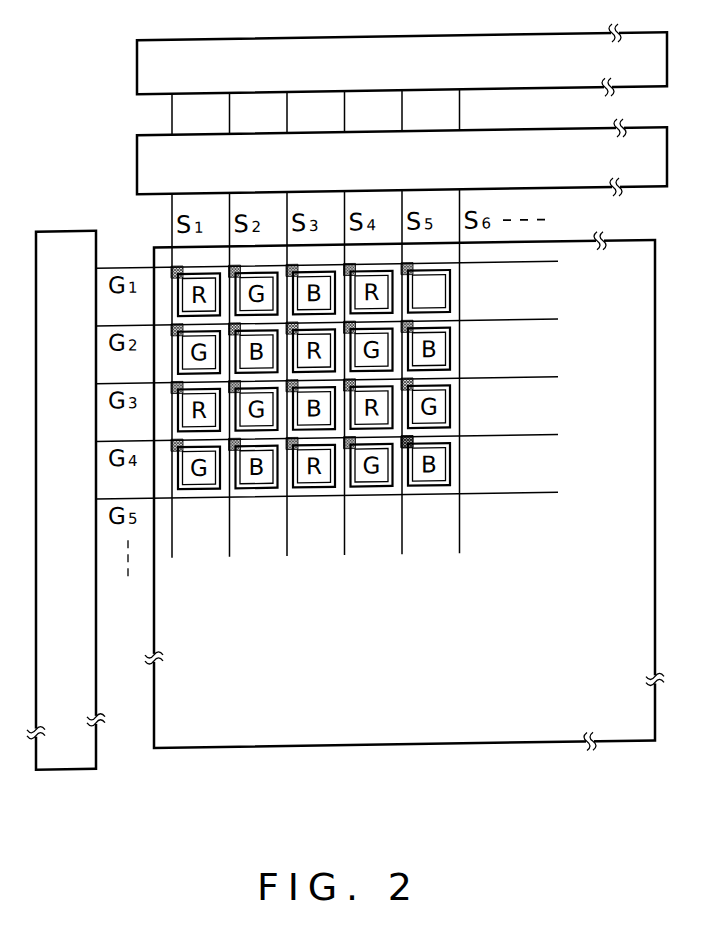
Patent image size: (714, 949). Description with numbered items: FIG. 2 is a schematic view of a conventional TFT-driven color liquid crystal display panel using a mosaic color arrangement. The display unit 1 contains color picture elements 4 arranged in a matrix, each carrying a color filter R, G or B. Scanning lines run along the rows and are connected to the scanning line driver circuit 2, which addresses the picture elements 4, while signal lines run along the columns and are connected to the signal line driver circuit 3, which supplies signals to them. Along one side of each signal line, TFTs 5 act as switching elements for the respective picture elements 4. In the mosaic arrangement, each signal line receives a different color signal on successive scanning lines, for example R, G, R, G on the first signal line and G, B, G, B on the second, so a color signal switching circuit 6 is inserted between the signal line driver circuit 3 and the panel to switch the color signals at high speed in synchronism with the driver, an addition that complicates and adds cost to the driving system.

The display unit 1 is at (655, 277).
The scanning line driver circuit 2 is at (66, 229).
The signal line driver circuit 3 is at (137, 72).
The color picture element 4 is at (452, 296).
The TFT 5 is at (413, 446).
The color signal switching circuit 6 is at (137, 159).